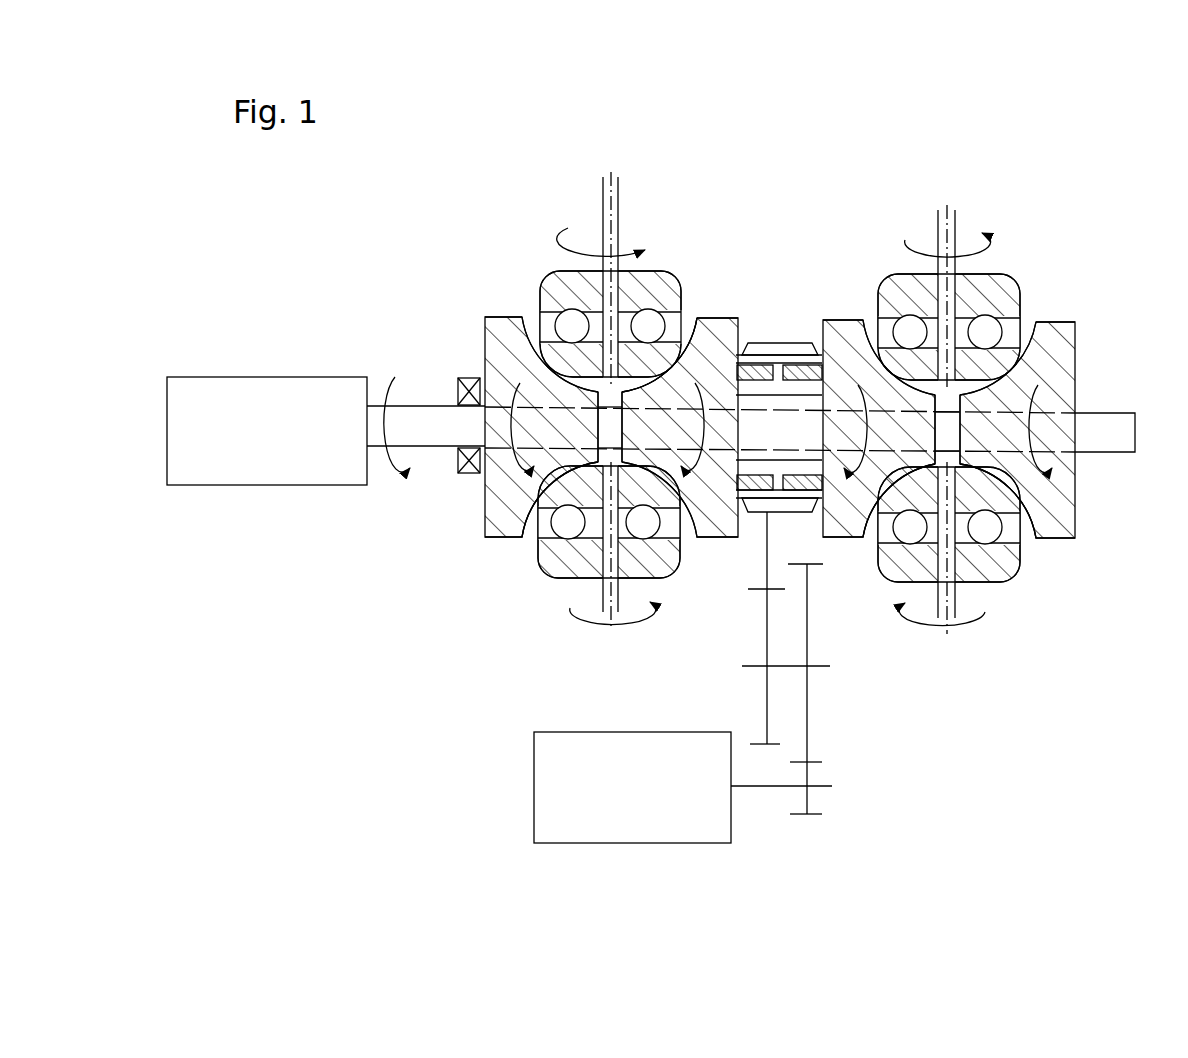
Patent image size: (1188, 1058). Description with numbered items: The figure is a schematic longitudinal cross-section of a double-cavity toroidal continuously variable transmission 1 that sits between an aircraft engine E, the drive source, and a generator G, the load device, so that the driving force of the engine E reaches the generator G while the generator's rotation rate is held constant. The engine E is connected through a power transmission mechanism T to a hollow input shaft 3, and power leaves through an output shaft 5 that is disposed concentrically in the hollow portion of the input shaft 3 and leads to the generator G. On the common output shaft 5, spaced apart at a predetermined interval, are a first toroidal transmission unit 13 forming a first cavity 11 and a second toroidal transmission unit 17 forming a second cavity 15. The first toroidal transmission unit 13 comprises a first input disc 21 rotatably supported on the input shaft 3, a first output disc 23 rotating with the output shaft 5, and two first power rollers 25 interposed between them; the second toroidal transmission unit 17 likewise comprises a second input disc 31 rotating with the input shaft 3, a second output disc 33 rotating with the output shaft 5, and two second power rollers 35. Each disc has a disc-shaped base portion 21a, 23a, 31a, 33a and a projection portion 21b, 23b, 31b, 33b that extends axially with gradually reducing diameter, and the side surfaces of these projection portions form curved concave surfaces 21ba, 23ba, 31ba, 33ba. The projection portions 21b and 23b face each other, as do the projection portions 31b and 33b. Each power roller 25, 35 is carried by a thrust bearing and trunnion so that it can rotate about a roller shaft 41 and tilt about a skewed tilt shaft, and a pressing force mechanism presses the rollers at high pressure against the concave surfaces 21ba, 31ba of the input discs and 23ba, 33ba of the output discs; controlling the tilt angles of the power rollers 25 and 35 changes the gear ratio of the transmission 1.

The toroidal continuously variable transmission 1 is at (455, 220).
The input shaft 3 is at (800, 395).
The output shaft 5 is at (430, 423).
The first cavity 11 is at (604, 422).
The first toroidal transmission unit 13 is at (604, 422).
The second cavity 15 is at (992, 462).
The second toroidal transmission unit 17 is at (992, 462).
The first input disc 21 is at (698, 422).
The base portion 21a is at (713, 317).
The projection portion 21b is at (636, 398).
The concave surface 21ba is at (687, 530).
The first output disc 23 is at (498, 458).
The base portion 23a is at (497, 317).
The projection portion 23b is at (585, 453).
The concave surface 23ba is at (527, 525).
The first power roller 25 is at (557, 290).
The second input disc 31 is at (876, 471).
The base portion 31a is at (837, 320).
The projection portion 31b is at (922, 460).
The concave surface 31ba is at (862, 520).
The second output disc 33 is at (1066, 503).
The base portion 33a is at (1057, 322).
The projection portion 33b is at (973, 467).
The concave surface 33ba is at (1022, 530).
The second power roller 35 is at (1027, 333).
The roller shaft 41 is at (602, 203).
The generator G is at (263, 393).
The aircraft engine E is at (558, 783).
The power transmission mechanism T is at (818, 668).